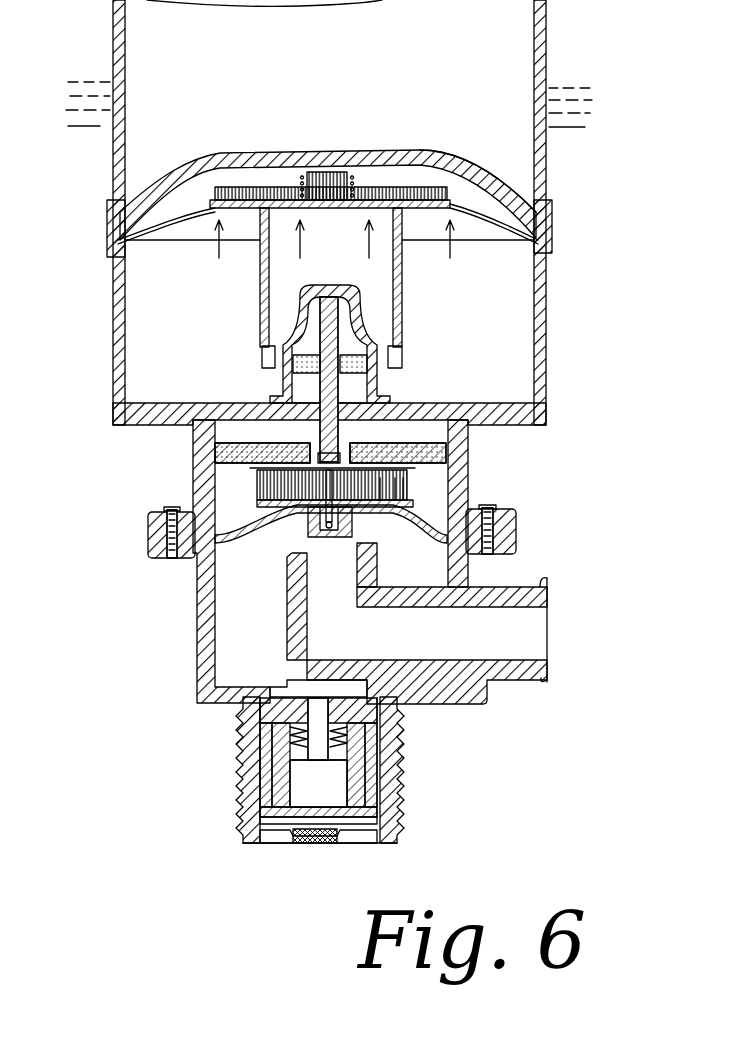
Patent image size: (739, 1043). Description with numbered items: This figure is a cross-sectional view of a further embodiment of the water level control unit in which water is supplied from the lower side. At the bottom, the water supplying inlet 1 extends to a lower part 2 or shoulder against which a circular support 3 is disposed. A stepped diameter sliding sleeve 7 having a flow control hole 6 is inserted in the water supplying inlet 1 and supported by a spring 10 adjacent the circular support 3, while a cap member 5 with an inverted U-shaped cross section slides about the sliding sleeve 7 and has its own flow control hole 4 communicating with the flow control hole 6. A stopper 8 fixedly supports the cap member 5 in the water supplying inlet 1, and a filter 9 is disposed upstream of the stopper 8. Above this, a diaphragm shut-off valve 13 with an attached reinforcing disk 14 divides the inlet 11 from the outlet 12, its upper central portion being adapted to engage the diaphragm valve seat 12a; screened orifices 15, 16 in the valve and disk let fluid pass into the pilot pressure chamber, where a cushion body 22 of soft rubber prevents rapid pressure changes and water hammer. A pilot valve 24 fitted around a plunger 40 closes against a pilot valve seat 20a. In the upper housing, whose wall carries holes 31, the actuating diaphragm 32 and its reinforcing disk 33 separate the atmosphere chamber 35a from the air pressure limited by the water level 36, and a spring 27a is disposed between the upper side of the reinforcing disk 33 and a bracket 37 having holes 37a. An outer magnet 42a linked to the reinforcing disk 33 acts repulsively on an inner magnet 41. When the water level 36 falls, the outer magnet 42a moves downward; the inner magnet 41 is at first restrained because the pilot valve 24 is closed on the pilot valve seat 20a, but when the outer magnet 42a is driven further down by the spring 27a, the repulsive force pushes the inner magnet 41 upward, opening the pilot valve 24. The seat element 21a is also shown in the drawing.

The water supplying inlet 1 is at (388, 825).
The lower part 2 is at (263, 692).
The circular support 3 is at (265, 710).
The flow control hole 4 is at (363, 780).
The cap member 5 is at (378, 797).
The flow control hole 6 is at (285, 783).
The sliding sleeve 7 is at (278, 750).
The stopper 8 is at (335, 822).
The filter 9 is at (285, 838).
The spring 10 is at (345, 727).
The inlet 11 is at (228, 578).
The outlet 12 is at (527, 614).
The diaphragm valve seat 12a is at (365, 560).
The diaphragm shut-off valve 13 is at (235, 507).
The reinforcing disk 14 is at (260, 480).
The screened orifice 15 is at (388, 500).
The screened orifice 16 is at (440, 494).
The pilot valve seat 20a is at (372, 450).
The valve seat 21a is at (308, 515).
The cushion body 22 is at (225, 447).
The pilot valve 24 is at (320, 455).
The spring 27a is at (355, 175).
The holes 31 is at (545, 372).
The actuating diaphragm 32 is at (167, 226).
The reinforcing disk 33 is at (233, 195).
The atmosphere chamber 35a is at (158, 105).
The water level 36 is at (566, 87).
The bracket 37 is at (292, 152).
The holes 37a is at (465, 172).
The plunger 40 is at (337, 325).
The inner magnet 41 is at (292, 364).
The outer magnet 42a is at (262, 357).